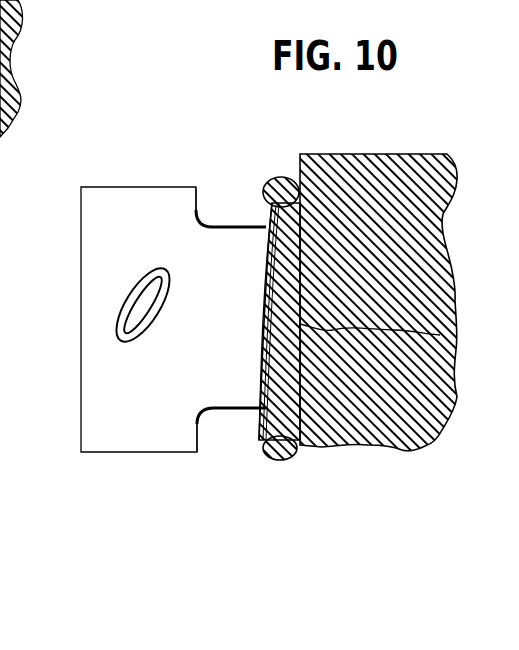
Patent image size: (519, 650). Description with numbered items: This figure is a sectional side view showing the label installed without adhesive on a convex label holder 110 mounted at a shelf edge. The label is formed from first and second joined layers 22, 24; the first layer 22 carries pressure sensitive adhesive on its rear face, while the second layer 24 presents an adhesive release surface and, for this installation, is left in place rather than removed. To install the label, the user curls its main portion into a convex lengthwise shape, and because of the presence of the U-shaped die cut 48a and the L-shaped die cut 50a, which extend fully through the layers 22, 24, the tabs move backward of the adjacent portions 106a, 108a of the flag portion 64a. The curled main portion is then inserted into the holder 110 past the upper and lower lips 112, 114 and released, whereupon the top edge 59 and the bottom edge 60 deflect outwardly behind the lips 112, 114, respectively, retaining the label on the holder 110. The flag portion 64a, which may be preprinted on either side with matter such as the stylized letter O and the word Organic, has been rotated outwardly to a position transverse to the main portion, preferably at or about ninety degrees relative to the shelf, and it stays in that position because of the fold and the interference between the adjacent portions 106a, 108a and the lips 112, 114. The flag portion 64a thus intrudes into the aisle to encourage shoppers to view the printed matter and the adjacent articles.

The first layer 22 is at (352, 447).
The second layer 24 is at (440, 335).
The die cut 48a is at (203, 443).
The die cut 50a is at (201, 208).
The top edge 59 is at (263, 214).
The bottom edge 60 is at (247, 429).
The flag portion 64a is at (81, 342).
The adjacent portion of flag portion 106a is at (201, 200).
The adjacent portion of flag portion 108a is at (197, 430).
The label holder 110 is at (300, 252).
The upper lip 112 is at (290, 177).
The lower lip 114 is at (281, 460).